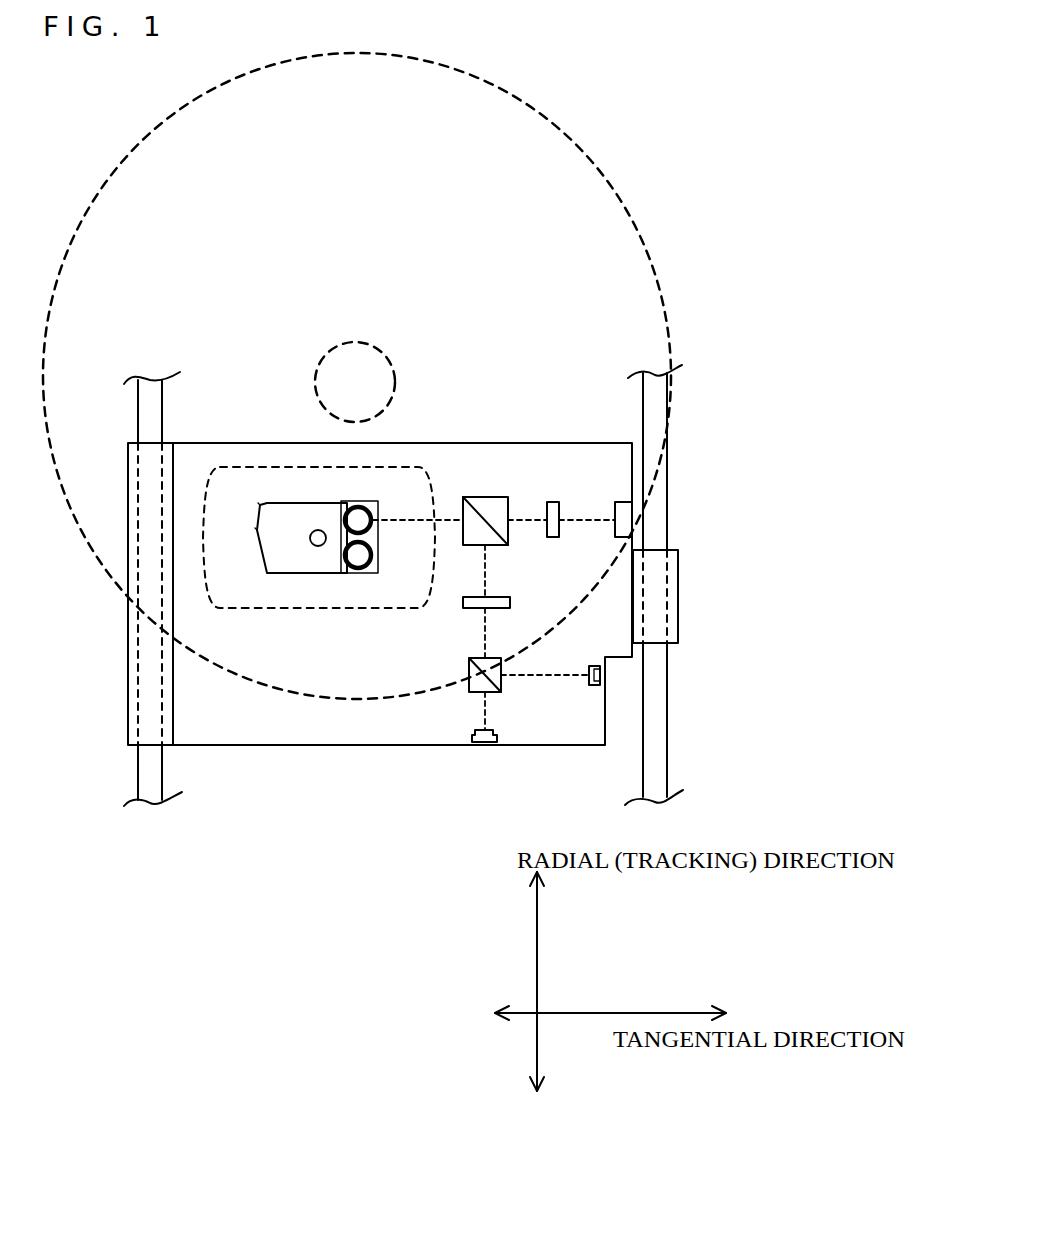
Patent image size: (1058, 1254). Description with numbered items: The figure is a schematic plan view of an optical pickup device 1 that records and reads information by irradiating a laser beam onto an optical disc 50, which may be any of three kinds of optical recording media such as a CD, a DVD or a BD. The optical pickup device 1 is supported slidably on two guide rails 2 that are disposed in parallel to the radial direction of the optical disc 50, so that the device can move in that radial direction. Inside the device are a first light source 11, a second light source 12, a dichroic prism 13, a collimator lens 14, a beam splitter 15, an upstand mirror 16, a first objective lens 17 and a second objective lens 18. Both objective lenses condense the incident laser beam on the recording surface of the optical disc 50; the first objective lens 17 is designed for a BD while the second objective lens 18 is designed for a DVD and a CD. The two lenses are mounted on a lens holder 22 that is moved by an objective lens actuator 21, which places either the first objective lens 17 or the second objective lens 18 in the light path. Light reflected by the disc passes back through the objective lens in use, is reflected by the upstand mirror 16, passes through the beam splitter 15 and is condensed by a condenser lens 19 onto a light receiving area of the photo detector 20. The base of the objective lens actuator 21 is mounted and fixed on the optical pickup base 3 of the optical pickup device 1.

The optical pickup device 1 is at (403, 626).
The guide rails 2 is at (138, 778).
The optical pickup base 3 is at (435, 443).
The first light source 11 is at (480, 742).
The second light source 12 is at (590, 685).
The dichroic prism 13 is at (478, 692).
The collimator lens 14 is at (477, 609).
The beam splitter 15 is at (492, 497).
The upstand mirror 16 is at (365, 505).
The first objective lens 17 is at (335, 507).
The second objective lens 18 is at (372, 565).
The condenser lens 19 is at (552, 502).
The photo detector 20 is at (616, 502).
The objective lens actuator 21 is at (352, 608).
The lens holder 22 is at (298, 575).
The optical disc 50 is at (627, 220).